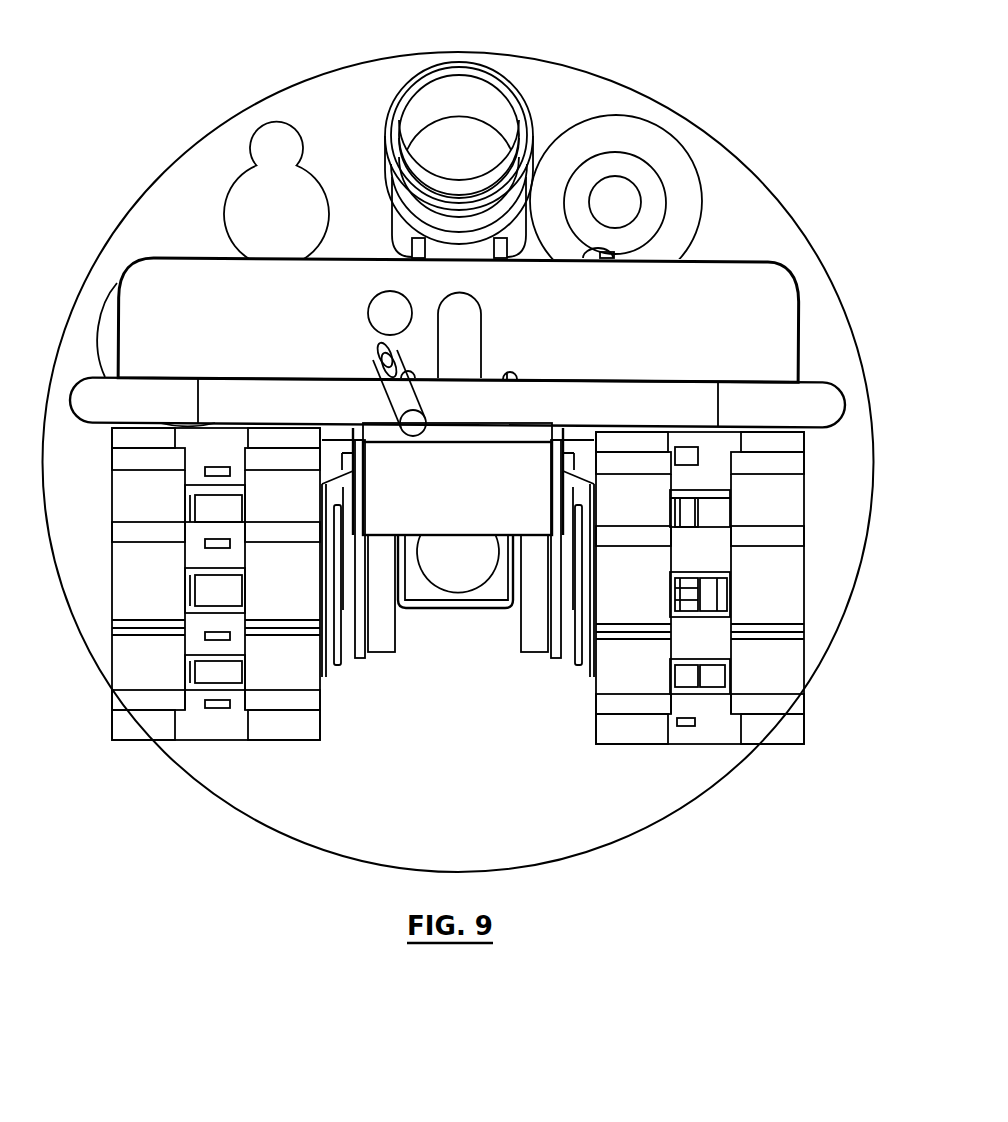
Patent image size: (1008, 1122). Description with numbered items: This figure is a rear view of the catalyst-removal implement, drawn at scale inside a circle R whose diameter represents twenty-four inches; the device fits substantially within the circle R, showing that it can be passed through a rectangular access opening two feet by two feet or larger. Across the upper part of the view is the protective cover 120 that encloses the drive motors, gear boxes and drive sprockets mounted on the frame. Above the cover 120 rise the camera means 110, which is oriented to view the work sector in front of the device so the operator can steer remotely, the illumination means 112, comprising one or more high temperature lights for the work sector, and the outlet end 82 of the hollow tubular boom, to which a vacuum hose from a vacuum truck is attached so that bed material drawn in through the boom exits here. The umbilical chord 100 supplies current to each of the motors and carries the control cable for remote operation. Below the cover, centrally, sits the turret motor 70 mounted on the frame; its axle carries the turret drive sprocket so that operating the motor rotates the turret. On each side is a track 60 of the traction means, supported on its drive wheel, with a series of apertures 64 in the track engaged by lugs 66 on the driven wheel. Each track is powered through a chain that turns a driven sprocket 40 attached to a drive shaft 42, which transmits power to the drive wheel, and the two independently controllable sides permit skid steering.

The scale circle R is at (800, 226).
The protective cover 120 is at (177, 255).
The camera means 110 is at (237, 178).
The outlet end 82 is at (458, 130).
The illumination means 112 is at (675, 126).
The umbilical chord 100 is at (383, 368).
The turret motor 70 is at (463, 608).
The track 60 is at (123, 672).
The apertures 64 is at (215, 612).
The lugs 66 is at (214, 578).
The driven sprocket 40 is at (337, 668).
The drive shaft 42 is at (327, 645).